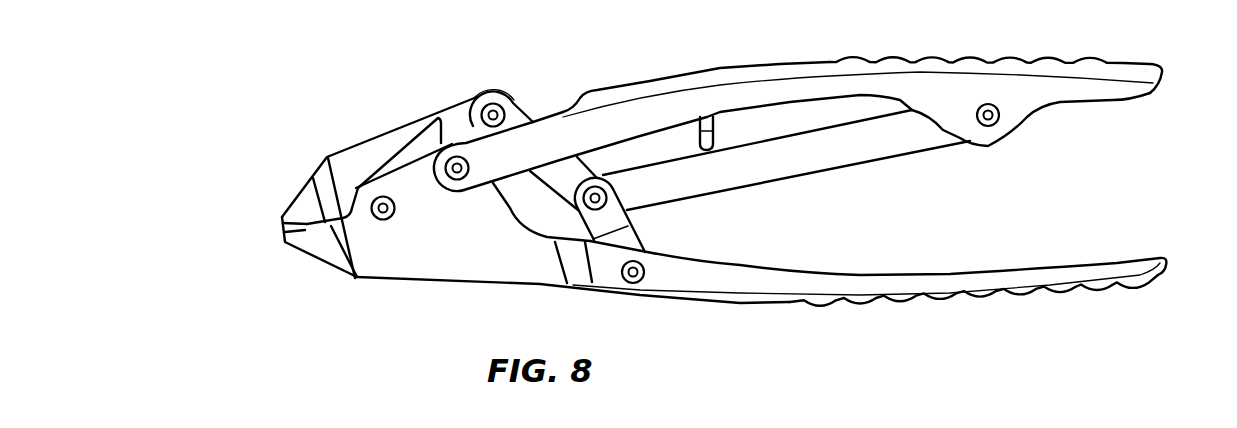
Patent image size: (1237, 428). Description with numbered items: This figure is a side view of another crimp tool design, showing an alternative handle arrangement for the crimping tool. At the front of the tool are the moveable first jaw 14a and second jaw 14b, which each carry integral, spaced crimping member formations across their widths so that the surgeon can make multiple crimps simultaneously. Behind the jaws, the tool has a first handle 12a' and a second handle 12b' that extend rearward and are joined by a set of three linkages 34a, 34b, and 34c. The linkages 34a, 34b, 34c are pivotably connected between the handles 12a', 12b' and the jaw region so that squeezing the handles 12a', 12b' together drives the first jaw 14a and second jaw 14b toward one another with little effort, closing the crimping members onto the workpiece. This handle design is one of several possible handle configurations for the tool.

The first handle 12a' is at (798, 102).
The second handle 12b' is at (761, 296).
The first jaw 14a is at (298, 202).
The second jaw 14b is at (315, 252).
The linkage 34a is at (760, 177).
The linkage 34b is at (627, 225).
The linkage 34c is at (520, 110).